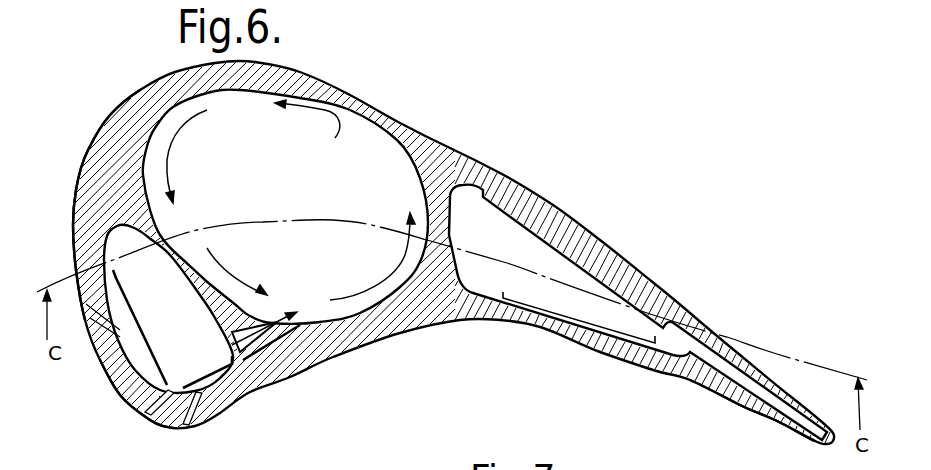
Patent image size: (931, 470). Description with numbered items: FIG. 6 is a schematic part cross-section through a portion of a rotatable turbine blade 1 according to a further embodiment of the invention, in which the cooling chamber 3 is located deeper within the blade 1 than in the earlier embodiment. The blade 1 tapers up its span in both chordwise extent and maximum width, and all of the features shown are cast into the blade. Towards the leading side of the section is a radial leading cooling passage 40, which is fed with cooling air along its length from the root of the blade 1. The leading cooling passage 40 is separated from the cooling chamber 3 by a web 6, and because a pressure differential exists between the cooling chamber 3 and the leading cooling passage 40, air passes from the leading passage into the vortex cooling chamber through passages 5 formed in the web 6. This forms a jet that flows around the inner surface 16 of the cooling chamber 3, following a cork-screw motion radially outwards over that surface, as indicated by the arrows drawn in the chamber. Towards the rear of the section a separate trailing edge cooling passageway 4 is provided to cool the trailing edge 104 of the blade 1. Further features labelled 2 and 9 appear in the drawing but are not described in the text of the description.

The turbine blade 1 is at (368, 92).
The leading edge outer wall 2 is at (120, 387).
The cooling chamber 3 is at (288, 190).
The trailing edge cooling passageway 4 is at (478, 244).
The passages 5 is at (262, 342).
The web 6 is at (137, 210).
The cooling holes 9 is at (222, 353).
The inner surface 16 is at (403, 150).
The leading cooling passage 40 is at (158, 334).
The trailing edge 104 is at (743, 407).